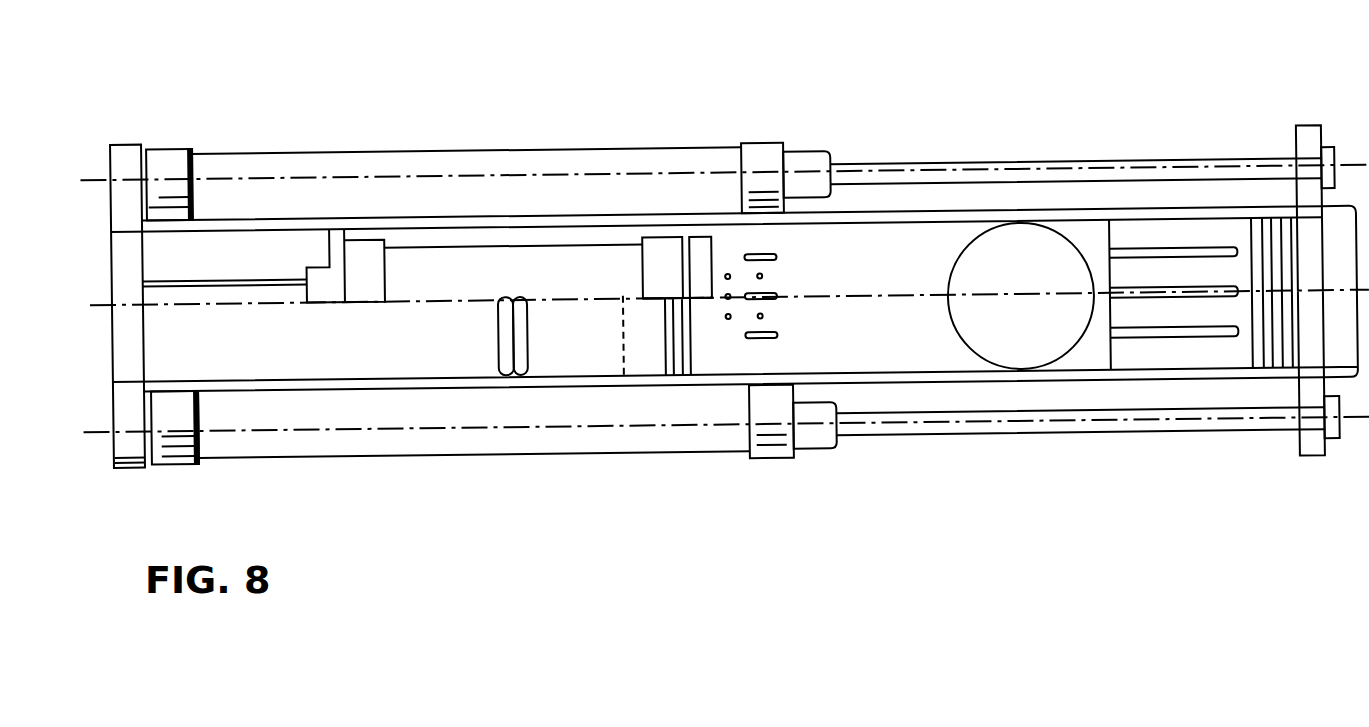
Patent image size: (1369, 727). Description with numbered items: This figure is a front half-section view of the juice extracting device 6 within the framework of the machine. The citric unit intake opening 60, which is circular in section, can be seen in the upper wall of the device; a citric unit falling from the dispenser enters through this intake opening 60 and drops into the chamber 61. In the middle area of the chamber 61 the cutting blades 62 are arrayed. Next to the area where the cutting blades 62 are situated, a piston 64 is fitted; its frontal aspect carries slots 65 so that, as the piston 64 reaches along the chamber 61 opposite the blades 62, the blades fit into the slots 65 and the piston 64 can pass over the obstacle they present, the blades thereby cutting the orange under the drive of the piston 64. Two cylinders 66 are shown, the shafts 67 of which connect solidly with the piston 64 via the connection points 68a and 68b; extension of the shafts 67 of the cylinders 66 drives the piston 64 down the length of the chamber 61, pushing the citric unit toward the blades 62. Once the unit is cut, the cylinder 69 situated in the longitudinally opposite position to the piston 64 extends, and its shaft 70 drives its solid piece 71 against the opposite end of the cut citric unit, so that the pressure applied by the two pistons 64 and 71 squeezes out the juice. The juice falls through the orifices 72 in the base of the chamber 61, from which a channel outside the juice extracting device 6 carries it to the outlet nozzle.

The juice extracting device 6 is at (888, 437).
The citric unit intake opening 60 is at (993, 327).
The chamber 61 is at (917, 352).
The cutting blades 62 is at (747, 258).
The piston 64 is at (1145, 355).
The slots 65 is at (1215, 330).
The cylinders 66 is at (544, 185).
The shafts 67 is at (1062, 170).
The connection point 68a is at (1310, 170).
The connection point 68b is at (1313, 415).
The cylinder 69 is at (438, 268).
The shaft 70 is at (270, 293).
The solid piece 71 is at (585, 350).
The orifices 72 is at (759, 241).